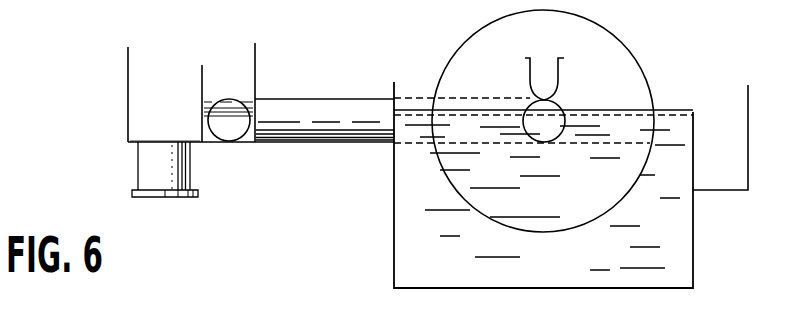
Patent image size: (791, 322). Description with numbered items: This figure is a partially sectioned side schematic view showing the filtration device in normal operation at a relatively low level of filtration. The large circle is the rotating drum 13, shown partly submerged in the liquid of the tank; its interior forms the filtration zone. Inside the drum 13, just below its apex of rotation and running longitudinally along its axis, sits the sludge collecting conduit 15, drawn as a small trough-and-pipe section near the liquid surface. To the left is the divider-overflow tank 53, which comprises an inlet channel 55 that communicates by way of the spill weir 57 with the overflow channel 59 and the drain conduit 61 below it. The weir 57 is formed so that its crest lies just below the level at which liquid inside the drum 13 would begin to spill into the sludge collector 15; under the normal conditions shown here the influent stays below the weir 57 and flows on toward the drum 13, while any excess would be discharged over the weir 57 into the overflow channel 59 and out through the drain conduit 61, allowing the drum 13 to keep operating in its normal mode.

The drum 13 is at (651, 80).
The sludge collecting conduit 15 is at (552, 85).
The divider-overflow tank 53 is at (128, 78).
The inlet channel 55 is at (226, 96).
The spill weir 57 is at (202, 93).
The overflow channel 59 is at (155, 112).
The drain conduit 61 is at (150, 168).